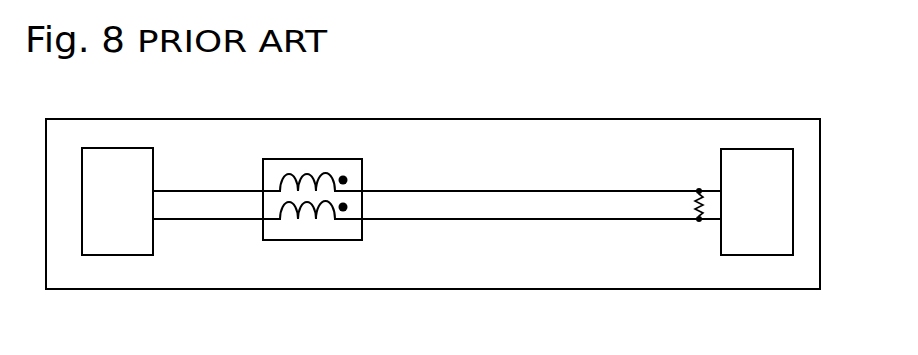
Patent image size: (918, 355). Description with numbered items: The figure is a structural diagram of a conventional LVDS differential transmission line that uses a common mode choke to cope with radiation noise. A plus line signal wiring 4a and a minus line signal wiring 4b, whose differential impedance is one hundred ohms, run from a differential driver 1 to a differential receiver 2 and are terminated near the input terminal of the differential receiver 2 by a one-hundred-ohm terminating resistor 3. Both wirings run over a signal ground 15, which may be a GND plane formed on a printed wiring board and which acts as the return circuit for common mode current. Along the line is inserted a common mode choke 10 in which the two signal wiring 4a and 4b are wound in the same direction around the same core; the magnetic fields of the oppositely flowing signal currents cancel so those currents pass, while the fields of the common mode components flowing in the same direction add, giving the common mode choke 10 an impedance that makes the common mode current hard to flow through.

The differential driver 1 is at (118, 222).
The differential receiver 2 is at (738, 222).
The terminating resistor 3 is at (685, 212).
The plus line signal wiring 4a is at (170, 190).
The minus line signal wiring 4b is at (207, 217).
The common mode choke 10 is at (338, 159).
The signal ground 15 is at (243, 258).